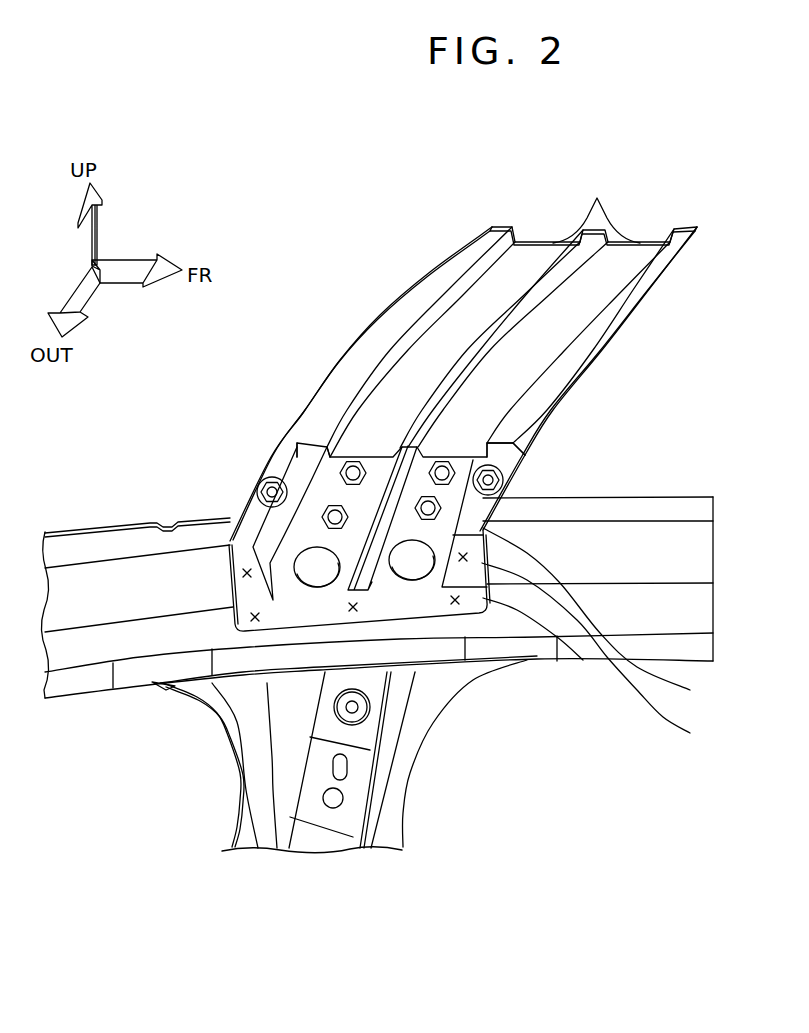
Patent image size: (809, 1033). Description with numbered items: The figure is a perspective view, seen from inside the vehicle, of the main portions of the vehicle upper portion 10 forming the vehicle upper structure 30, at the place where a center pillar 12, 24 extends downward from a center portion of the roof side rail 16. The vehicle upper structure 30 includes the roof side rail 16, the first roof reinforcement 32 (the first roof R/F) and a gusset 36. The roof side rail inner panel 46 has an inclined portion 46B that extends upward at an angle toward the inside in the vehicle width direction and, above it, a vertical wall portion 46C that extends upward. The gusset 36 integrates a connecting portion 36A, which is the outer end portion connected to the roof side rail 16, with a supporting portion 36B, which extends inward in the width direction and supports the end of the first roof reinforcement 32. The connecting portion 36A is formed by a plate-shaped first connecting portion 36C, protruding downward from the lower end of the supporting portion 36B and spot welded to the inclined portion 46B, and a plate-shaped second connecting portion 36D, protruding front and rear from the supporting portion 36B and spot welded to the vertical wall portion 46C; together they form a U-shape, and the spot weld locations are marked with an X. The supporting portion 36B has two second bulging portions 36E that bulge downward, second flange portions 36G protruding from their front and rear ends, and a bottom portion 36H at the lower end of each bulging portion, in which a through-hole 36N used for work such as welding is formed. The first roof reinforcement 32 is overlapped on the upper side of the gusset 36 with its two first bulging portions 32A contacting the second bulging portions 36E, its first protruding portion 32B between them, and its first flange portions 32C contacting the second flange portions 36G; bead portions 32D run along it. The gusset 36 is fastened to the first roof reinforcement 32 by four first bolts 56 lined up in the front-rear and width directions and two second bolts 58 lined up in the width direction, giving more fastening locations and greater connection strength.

The vehicle upper body structure 10 is at (311, 206).
The center pillar 12 is at (481, 714).
The roof side rail 16 is at (583, 664).
The center pillar 24 is at (405, 815).
The vehicle upper structure 30 is at (570, 462).
The first roof reinforcement 32 is at (465, 357).
The first bulging portions 32A is at (483, 306).
The first protruding portion 32B is at (588, 250).
The first flange portions 32C is at (450, 266).
The bead portions 32D is at (596, 208).
The gusset 36 is at (449, 577).
The connecting portion 36A is at (643, 639).
The supporting portion 36B is at (290, 468).
The first connecting portion 36C is at (609, 656).
The second connecting portion 36D is at (610, 616).
The second bulging portions 36E is at (300, 547).
The second flange portions 36G is at (278, 450).
The bottom portion 36H is at (237, 522).
The through-hole 36N is at (420, 567).
The roof side rail inner panel 46 is at (413, 575).
The inclined portion 46B is at (703, 606).
The vertical wall portion 46C is at (703, 549).
The first bolts 56 is at (360, 461).
The second bolts 58 is at (258, 490).